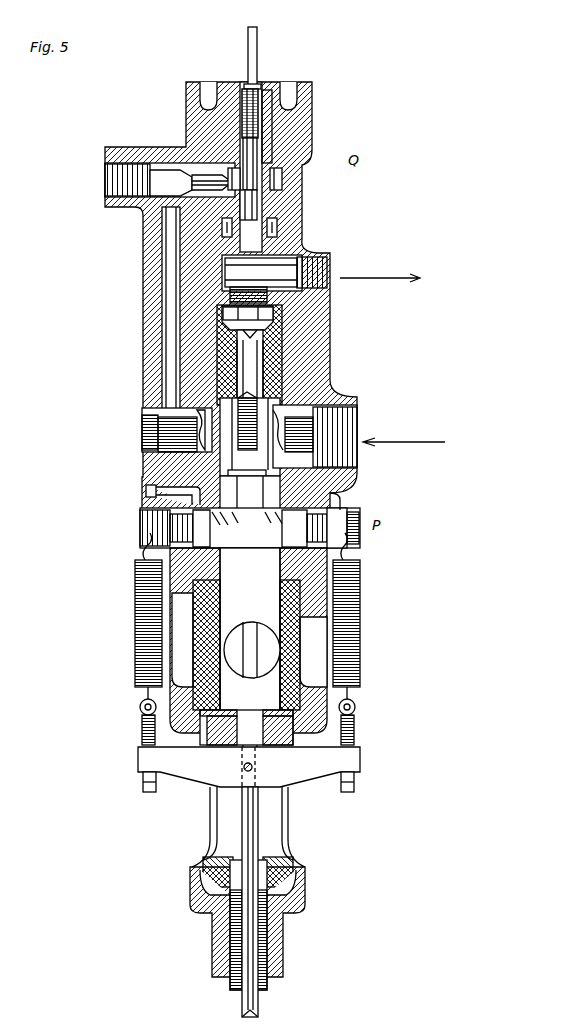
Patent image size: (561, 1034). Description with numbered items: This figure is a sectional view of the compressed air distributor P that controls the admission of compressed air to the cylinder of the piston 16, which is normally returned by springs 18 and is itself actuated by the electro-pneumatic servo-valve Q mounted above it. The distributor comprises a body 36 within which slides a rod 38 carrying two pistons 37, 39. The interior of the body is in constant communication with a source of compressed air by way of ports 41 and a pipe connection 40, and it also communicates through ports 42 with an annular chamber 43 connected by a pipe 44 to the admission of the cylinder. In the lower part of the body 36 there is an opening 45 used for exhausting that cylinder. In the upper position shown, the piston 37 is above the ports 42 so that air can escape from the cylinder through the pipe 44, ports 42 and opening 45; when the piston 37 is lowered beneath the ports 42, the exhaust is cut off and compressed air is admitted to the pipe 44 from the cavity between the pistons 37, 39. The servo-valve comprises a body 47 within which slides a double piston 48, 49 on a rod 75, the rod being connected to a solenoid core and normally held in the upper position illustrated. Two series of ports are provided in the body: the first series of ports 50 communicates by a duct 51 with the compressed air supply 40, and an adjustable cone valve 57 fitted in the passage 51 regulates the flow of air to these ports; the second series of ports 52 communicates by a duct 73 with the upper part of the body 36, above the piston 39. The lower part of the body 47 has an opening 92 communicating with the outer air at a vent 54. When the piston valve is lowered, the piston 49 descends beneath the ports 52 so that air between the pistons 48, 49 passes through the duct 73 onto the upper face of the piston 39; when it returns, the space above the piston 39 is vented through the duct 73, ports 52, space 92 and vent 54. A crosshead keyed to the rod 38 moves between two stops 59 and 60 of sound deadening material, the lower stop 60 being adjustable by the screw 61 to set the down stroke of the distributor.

The rod 75 is at (259, 57).
The piston 48 is at (270, 92).
The duct 51 is at (205, 135).
The adjustable cone valve 57 is at (176, 173).
The body 47 is at (262, 152).
The first series of ports 50 is at (264, 183).
The piston 49 is at (266, 207).
The second series of ports 52 is at (277, 226).
The duct 73 is at (222, 272).
The opening 92 is at (261, 280).
The vent 54 is at (290, 272).
The piston 39 is at (220, 337).
The ports 41 is at (210, 422).
The pipe connection 40 is at (340, 432).
The piston 37 is at (160, 490).
The pipe 44 is at (150, 490).
The ports 42 is at (210, 510).
The annular chamber 43 is at (290, 515).
The body 36 is at (215, 565).
The rod 38 is at (245, 610).
The opening 45 is at (395, 612).
The piston 16 is at (142, 660).
The stop 59 is at (228, 745).
The springs 18 is at (305, 772).
The lower stop 60 is at (290, 862).
The screw 61 is at (270, 985).